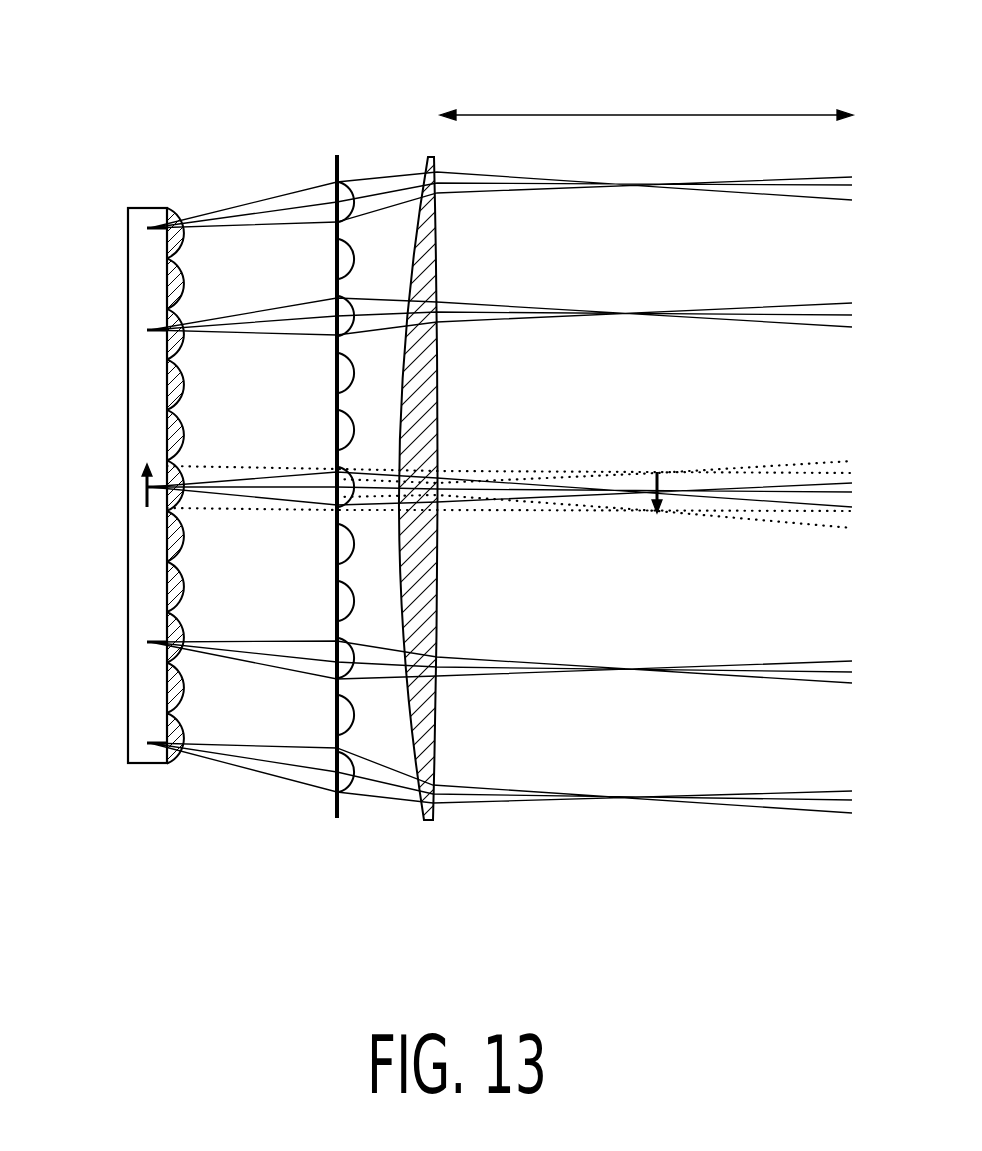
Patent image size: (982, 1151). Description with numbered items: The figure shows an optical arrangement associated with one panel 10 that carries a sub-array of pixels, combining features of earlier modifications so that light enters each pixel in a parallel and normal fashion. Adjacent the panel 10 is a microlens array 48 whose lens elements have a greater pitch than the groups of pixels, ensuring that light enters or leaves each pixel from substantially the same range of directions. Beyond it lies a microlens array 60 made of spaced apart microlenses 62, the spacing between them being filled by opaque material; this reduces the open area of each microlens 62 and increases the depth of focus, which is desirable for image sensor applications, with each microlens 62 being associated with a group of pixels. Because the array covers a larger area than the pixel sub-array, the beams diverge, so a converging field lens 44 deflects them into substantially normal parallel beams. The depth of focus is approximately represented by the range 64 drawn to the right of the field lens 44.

The panel 10 is at (128, 283).
The microlens array 48 is at (181, 178).
The microlens array 60 is at (336, 134).
The microlens 62 is at (352, 792).
The field lens 44 is at (435, 157).
The range 64 is at (660, 112).